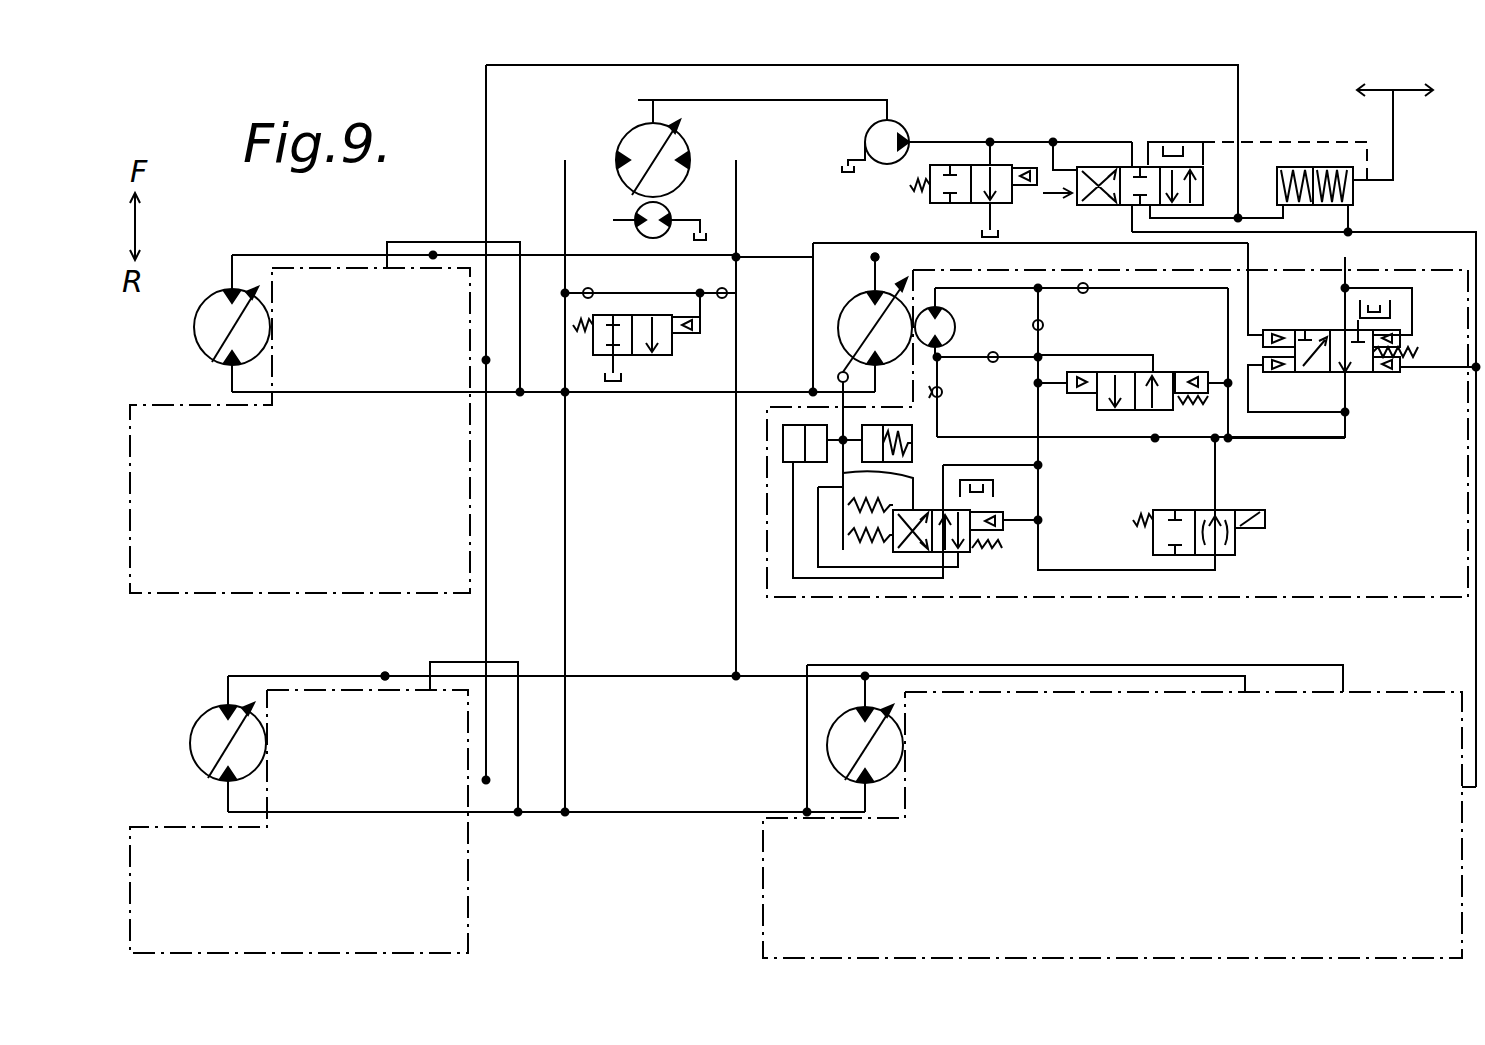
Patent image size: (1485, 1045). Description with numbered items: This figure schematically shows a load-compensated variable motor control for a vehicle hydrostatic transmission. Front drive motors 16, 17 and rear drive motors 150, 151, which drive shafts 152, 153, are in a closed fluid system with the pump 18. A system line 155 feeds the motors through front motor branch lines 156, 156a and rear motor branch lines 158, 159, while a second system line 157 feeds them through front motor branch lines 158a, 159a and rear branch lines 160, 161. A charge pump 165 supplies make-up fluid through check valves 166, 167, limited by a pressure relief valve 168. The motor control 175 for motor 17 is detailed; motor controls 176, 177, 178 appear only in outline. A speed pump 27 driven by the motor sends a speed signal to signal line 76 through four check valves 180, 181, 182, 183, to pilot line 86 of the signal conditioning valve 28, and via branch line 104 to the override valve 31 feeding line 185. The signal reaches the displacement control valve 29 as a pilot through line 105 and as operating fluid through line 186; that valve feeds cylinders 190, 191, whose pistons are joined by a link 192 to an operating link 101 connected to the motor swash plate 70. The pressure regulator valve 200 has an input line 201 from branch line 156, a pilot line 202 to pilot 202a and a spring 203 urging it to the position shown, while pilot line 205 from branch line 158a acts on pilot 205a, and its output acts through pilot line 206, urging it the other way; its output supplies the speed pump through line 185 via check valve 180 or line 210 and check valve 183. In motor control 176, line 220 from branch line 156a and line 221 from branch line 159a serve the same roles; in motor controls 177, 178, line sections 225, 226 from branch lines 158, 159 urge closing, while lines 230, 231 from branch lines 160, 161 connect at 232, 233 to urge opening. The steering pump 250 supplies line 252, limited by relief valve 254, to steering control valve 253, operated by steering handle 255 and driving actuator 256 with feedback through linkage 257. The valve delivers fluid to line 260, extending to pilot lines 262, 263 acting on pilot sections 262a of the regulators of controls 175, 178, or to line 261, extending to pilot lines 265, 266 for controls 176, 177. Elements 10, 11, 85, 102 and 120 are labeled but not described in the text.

The pump unit 10 is at (195, 327).
The front drive motor 16 is at (258, 327).
The pump 18 is at (685, 150).
The charge pump 165 is at (668, 222).
The check valve 166 is at (585, 287).
The check valve 167 is at (718, 290).
The pressure relief valve 168 is at (655, 360).
The front motor branch line 156 is at (780, 243).
The front motor branch line 156a is at (541, 254).
The system line 155 is at (730, 492).
The second system line 157 is at (567, 520).
The rear motor branch line 158 is at (740, 676).
The front motor branch line 158a is at (748, 396).
The rear motor branch line 159 is at (310, 676).
The front motor branch line 159a is at (487, 395).
The rear branch line 160 is at (492, 814).
The rear branch line 161 is at (662, 814).
The line 220 is at (433, 257).
The line 221 is at (412, 242).
The pilot line 265 is at (486, 361).
The pilot line 266 is at (486, 781).
The motor control 176 is at (262, 606).
The motor control 177 is at (486, 935).
The motor control 178 is at (750, 917).
The motor control 175 is at (1362, 611).
The pump 250 is at (903, 132).
The line 261 is at (1070, 70).
The line 252 is at (1085, 141).
The steering control valve 253 is at (1191, 134).
The relief valve 254 is at (966, 216).
The steering handle 255 is at (1115, 208).
The actuator 256 is at (1313, 170).
The linkage 257 is at (1315, 148).
The pilot line 205 is at (855, 243).
The line 210 is at (1248, 285).
The motor swash plate 70 is at (849, 276).
The front drive motor 17 is at (850, 312).
The motor shaft 11 is at (835, 328).
The speed pump 27 is at (955, 323).
The check valve 183 is at (1087, 293).
The check valve 182 is at (1044, 327).
The check valve 181 is at (992, 362).
The check valve 180 is at (945, 395).
The pilot line 86 is at (1082, 425).
The valve 85 is at (1122, 370).
The signal conditioning valve 28 is at (1180, 368).
The line 185 is at (1253, 440).
The signal line 76 is at (1045, 465).
The line 186 is at (968, 455).
The line 105 is at (1027, 522).
The branch line 104 is at (1082, 578).
The override valve 31 is at (1275, 543).
The cylinder 190 is at (783, 440).
The cylinder 191 is at (913, 433).
The link 192 is at (793, 478).
The operating link 101 is at (931, 517).
The displacement control valve 29 is at (978, 583).
The spring 120 is at (1006, 560).
The springs 102 is at (873, 545).
The input line 201 is at (1335, 322).
The pilot 205a is at (1275, 328).
The pilot line 206 is at (1268, 412).
The pressure regulator valve 200 is at (1390, 386).
The spring 203 is at (1420, 353).
The pilot line 202 is at (1370, 287).
The pilot 202a is at (1400, 335).
The line 260 is at (1476, 262).
The pilot line 262 is at (1400, 372).
The pilot section 262a is at (1317, 462).
The pilot line 263 is at (1462, 788).
The rear drive motor 150 is at (205, 722).
The shaft 152 is at (188, 745).
The rear drive motor 151 is at (838, 752).
The shaft 153 is at (810, 748).
The line section 226 is at (385, 678).
The connection 232 is at (432, 683).
The line 230 is at (566, 752).
The line 231 is at (805, 700).
The line section 225 is at (1240, 682).
The connection 233 is at (1345, 693).